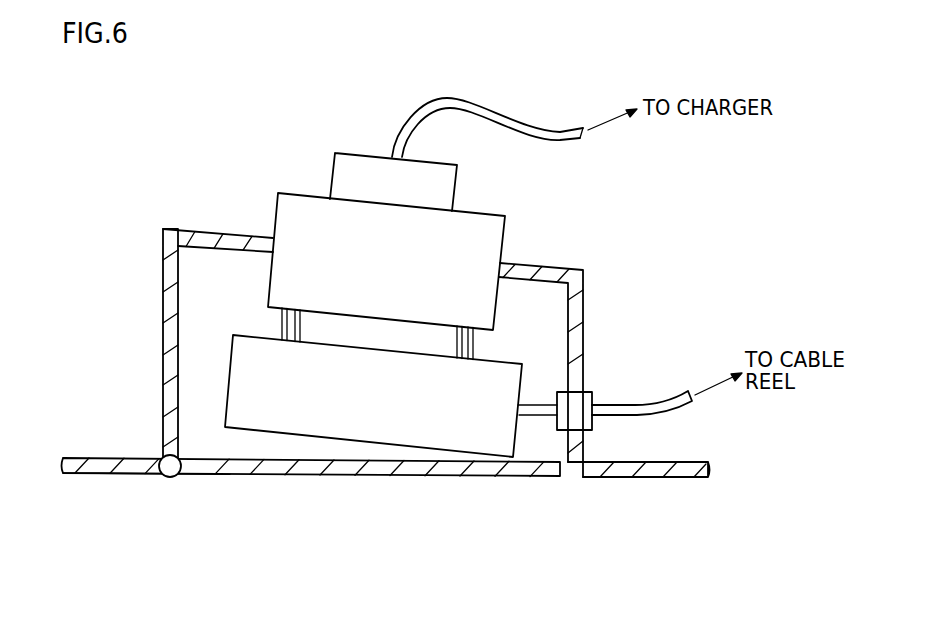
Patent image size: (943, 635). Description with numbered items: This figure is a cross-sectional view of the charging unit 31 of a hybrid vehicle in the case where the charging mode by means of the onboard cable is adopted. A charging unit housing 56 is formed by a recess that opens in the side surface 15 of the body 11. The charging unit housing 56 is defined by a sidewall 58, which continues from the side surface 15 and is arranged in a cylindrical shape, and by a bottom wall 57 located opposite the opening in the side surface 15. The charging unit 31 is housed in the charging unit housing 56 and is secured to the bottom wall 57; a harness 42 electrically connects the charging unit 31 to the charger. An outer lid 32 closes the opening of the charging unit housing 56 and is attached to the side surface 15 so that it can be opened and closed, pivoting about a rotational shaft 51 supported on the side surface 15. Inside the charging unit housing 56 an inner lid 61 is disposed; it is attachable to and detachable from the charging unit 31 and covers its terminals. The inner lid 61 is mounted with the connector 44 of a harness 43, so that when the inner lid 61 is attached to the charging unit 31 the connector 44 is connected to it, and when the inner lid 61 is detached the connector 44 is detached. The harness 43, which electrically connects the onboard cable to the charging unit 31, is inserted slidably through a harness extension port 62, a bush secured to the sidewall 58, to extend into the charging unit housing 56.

The body 11 is at (108, 475).
The side surface 15 is at (632, 478).
The charging unit 31 is at (483, 238).
The outer lid 32 is at (252, 473).
The harness 42 is at (453, 100).
The harness 43 is at (640, 407).
The connector 44 is at (315, 328).
The rotational shaft 51 is at (169, 470).
The charging unit housing 56 is at (188, 283).
The bottom wall 57 is at (214, 242).
The sidewall 58 is at (575, 315).
The inner lid 61 is at (362, 443).
The harness extension port 62 is at (583, 422).